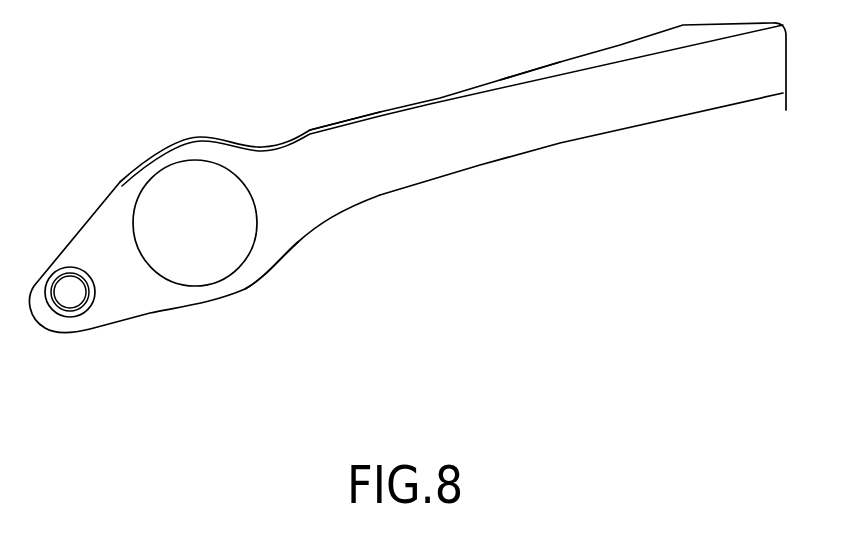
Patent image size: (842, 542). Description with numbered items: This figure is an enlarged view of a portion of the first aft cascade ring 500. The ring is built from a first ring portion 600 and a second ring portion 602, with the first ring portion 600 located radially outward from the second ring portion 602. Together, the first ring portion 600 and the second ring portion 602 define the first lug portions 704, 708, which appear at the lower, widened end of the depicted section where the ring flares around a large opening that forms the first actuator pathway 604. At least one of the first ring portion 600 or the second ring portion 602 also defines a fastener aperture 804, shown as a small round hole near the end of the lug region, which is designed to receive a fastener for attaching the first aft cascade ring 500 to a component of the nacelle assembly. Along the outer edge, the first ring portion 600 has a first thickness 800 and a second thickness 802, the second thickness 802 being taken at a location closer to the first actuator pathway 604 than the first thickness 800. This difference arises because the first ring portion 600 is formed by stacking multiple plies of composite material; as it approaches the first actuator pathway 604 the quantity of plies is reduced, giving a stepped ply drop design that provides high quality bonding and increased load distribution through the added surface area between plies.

The first aft cascade ring 500 is at (122, 124).
The first ring portion 600 is at (364, 118).
The second ring portion 602 is at (480, 153).
The first actuator pathway 604 is at (168, 208).
The first lug portion 704 is at (183, 273).
The first lug portion 708 is at (227, 253).
The first thickness 800 is at (518, 118).
The second thickness 802 is at (337, 172).
The fastener aperture 804 is at (70, 300).